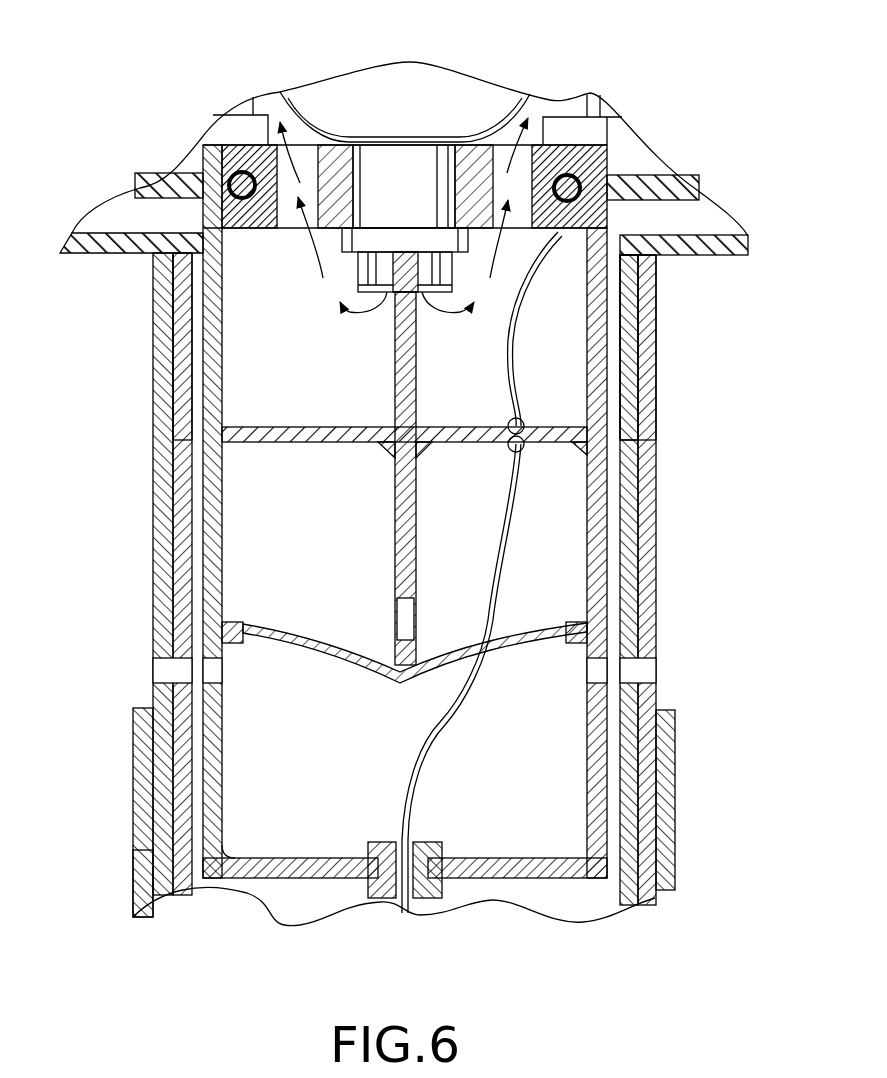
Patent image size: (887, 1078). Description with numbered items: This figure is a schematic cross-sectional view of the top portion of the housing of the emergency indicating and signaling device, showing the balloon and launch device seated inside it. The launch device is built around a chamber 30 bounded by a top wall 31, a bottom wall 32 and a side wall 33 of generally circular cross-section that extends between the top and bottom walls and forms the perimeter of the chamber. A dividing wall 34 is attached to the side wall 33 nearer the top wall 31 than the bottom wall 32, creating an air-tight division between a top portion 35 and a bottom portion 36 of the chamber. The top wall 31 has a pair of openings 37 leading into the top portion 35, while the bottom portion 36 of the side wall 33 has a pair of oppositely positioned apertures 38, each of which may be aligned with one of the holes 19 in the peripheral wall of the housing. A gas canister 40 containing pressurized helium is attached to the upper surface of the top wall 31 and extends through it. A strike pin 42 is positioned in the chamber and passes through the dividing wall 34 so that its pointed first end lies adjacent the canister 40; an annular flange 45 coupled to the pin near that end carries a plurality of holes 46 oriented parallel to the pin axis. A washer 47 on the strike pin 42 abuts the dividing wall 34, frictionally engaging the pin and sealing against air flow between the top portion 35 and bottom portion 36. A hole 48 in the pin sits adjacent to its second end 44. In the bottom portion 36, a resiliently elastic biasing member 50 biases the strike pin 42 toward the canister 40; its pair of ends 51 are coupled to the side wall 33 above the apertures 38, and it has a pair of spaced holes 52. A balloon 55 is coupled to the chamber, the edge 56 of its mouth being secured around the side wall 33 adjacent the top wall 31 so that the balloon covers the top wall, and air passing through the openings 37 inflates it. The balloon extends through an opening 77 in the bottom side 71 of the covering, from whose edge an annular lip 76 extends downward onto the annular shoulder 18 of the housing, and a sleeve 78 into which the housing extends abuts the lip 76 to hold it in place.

The annular shoulder 18 is at (657, 388).
The holes 19 is at (170, 667).
The chamber 30 is at (250, 877).
The top wall 31 is at (657, 280).
The bottom wall 32 is at (523, 875).
The side wall 33 is at (608, 522).
The dividing wall 34 is at (612, 447).
The top portion 35 is at (270, 366).
The bottom portion 36 is at (262, 557).
The openings 37 is at (283, 155).
The apertures 38 is at (213, 668).
The gas canister 40 is at (450, 107).
The strike pin 42 is at (398, 523).
The second end 44 is at (288, 644).
The annular flange 45 is at (362, 278).
The holes 46 is at (363, 325).
The washer 47 is at (612, 465).
The hole 48 is at (410, 615).
The biasing member 50 is at (436, 668).
The ends 51 is at (215, 607).
The spaced holes 52 is at (152, 740).
The balloon 55 is at (692, 197).
The edge 56 is at (605, 165).
The bottom side 71 is at (565, 230).
The annular lip 76 is at (162, 285).
The opening 77 is at (617, 232).
The sleeve 78 is at (135, 868).